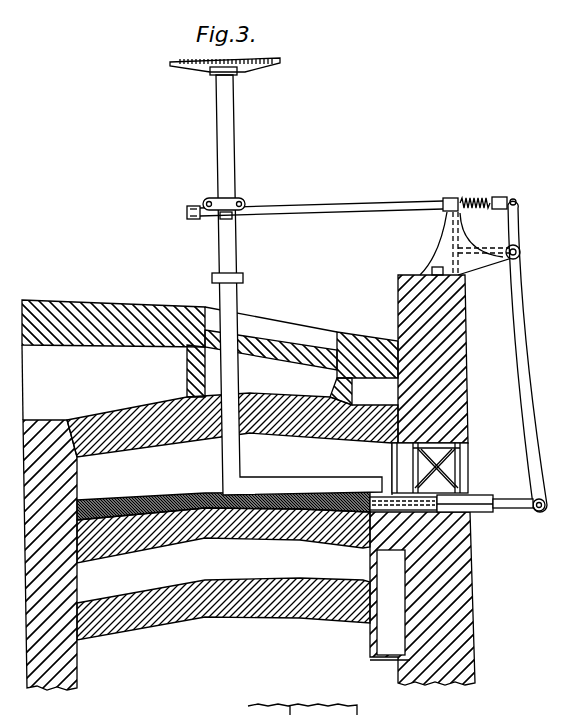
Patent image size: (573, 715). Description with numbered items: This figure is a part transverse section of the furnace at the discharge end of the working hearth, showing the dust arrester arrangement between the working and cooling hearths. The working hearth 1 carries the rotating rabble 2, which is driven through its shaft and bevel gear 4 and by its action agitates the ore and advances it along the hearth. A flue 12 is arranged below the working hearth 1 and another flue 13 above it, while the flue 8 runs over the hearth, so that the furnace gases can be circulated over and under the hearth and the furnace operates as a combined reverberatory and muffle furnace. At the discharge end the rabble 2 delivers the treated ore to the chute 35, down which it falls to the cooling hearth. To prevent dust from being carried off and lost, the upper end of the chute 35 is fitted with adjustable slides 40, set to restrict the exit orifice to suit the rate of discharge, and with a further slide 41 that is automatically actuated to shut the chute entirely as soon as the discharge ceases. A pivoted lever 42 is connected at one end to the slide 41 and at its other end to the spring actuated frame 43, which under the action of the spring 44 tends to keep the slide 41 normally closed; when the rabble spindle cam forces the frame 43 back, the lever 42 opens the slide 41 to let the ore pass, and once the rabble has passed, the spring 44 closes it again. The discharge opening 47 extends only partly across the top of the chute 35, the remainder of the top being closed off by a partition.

The working hearth 1 is at (163, 499).
The rabble 2 is at (299, 285).
The bevel gear 4 is at (212, 65).
The flue 8 is at (286, 357).
The flue 12 is at (286, 357).
The flue 13 is at (286, 357).
The chute 35 is at (390, 605).
The adjustable slide 40 is at (503, 498).
The slide 41 is at (508, 512).
The pivoted lever 42 is at (531, 355).
The spring actuated frame 43 is at (347, 205).
The spring 44 is at (466, 236).
The discharge opening 47 is at (403, 515).